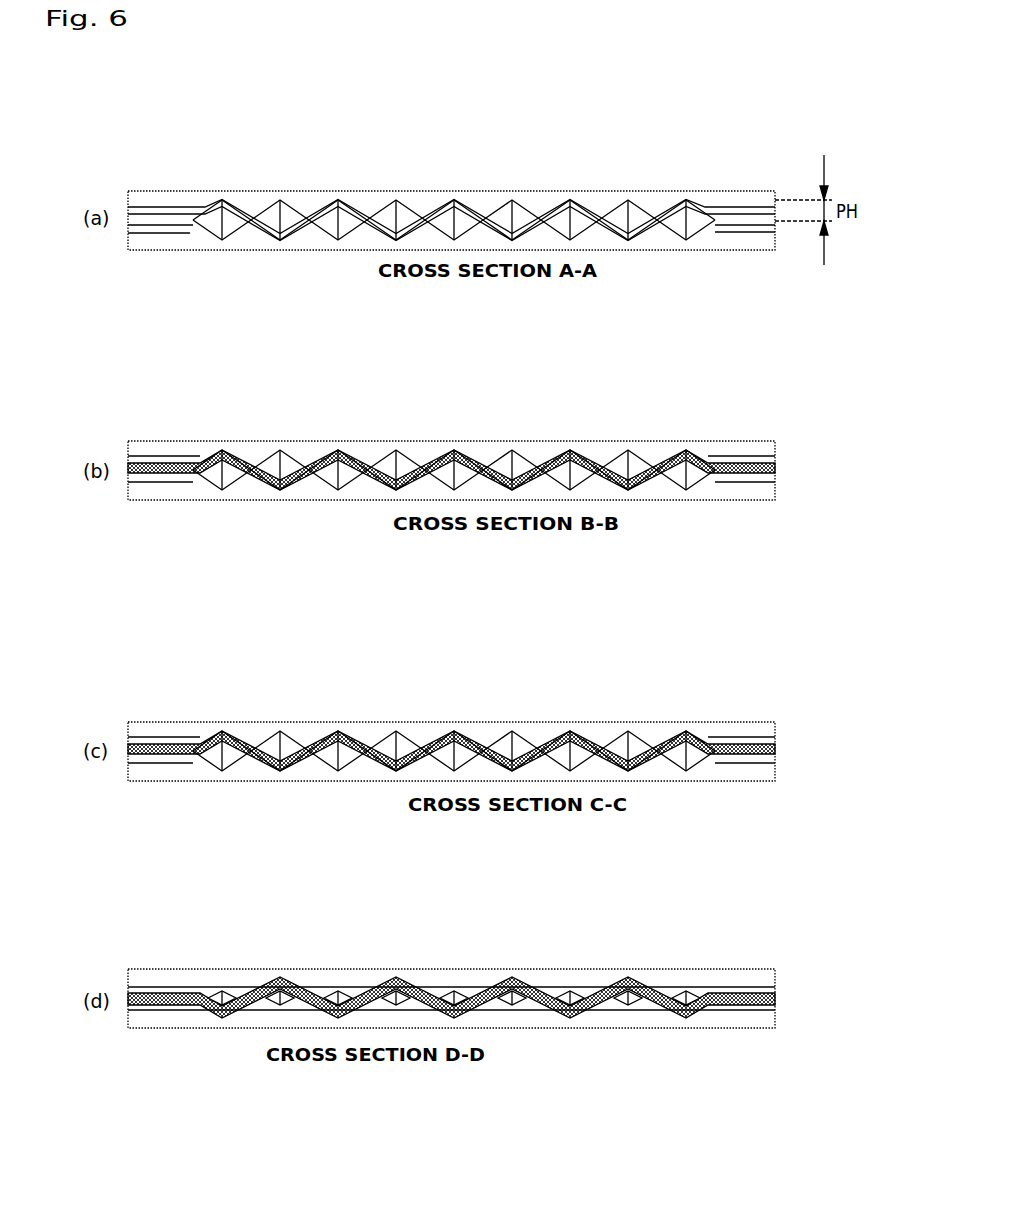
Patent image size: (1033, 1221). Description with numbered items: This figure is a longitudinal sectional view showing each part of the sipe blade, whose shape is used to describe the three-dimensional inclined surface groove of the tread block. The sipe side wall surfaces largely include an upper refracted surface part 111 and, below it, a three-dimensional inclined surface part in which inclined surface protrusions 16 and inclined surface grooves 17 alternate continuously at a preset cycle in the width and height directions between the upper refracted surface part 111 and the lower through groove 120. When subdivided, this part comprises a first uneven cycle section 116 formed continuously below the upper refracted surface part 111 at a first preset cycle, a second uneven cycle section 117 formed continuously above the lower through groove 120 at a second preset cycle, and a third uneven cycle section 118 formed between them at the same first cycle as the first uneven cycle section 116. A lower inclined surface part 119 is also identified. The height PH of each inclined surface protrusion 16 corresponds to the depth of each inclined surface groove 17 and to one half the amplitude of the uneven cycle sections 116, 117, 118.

The inclined surface protrusion 16 is at (683, 200).
The inclined surface groove 17 is at (676, 242).
The upper refracted surface part 111 is at (462, 203).
The first uneven cycle section 116 is at (510, 200).
The second uneven cycle section 117 is at (350, 775).
The third uneven cycle section 118 is at (345, 232).
The lower inclined surface part 119 is at (572, 987).
The lower through groove 120 is at (592, 191).